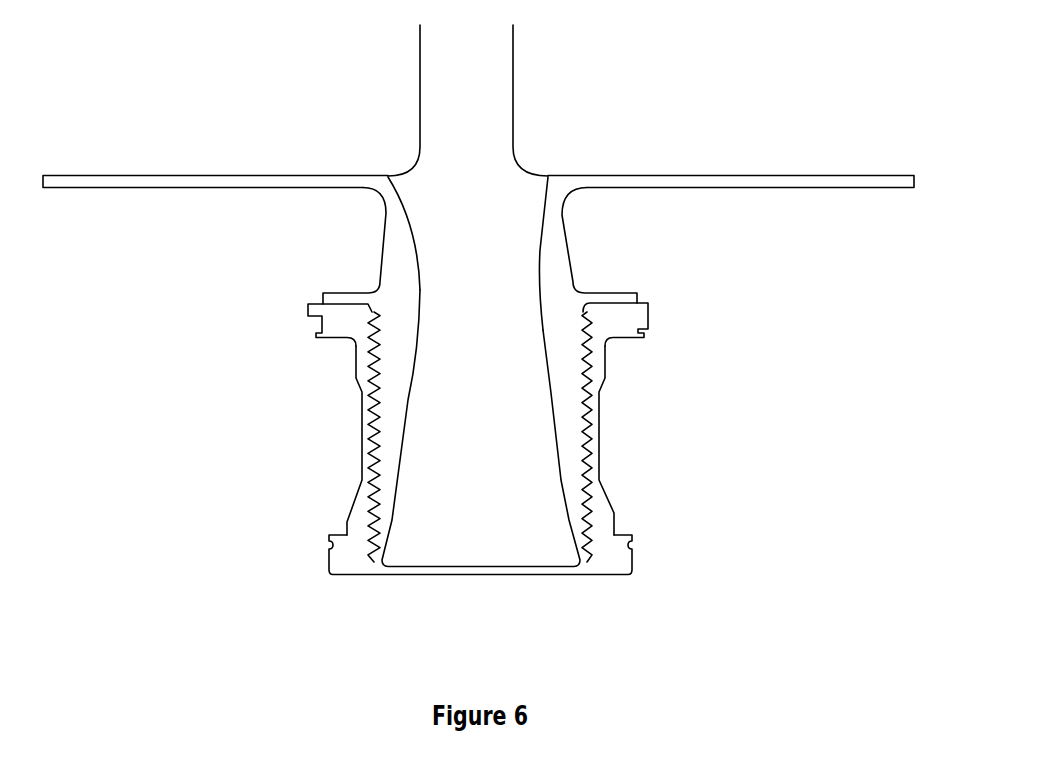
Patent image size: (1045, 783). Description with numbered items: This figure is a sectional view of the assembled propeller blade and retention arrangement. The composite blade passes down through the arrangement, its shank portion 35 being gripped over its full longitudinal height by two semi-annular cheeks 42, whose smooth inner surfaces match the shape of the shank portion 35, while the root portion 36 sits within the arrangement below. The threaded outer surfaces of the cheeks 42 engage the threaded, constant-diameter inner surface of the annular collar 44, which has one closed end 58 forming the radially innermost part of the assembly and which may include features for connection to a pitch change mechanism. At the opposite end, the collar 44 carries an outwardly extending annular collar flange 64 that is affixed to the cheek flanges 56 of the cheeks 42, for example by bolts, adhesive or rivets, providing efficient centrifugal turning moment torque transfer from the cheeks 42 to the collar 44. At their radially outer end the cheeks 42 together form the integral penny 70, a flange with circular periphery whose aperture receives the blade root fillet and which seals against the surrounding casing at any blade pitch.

The integral penny 70 is at (663, 185).
The shank portion 35 is at (499, 248).
The root portion 36 is at (499, 468).
The cheek flange 56 is at (614, 296).
The collar flange 64 is at (613, 325).
The cheek 42 is at (667, 375).
The collar 44 is at (595, 464).
The closed end 58 is at (477, 575).